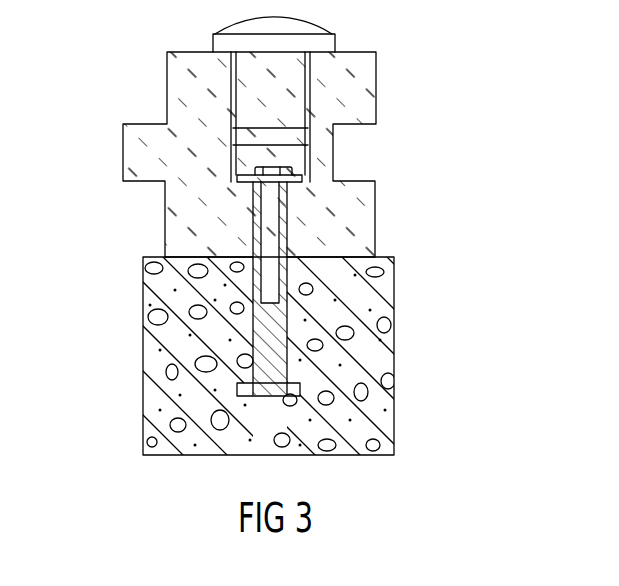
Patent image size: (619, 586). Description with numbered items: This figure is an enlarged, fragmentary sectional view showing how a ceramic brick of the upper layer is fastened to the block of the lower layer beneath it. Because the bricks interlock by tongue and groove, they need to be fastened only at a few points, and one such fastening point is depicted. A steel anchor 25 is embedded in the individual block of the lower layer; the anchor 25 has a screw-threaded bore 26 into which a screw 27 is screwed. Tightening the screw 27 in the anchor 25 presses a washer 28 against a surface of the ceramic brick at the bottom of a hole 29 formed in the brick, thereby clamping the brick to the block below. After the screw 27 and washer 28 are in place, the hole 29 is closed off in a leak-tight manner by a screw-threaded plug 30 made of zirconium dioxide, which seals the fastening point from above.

The steel anchor 25 is at (258, 351).
The screw-threaded bore 26 is at (277, 279).
The screw 27 is at (240, 173).
The washer 28 is at (300, 175).
The hole 29 is at (242, 158).
The screw-threaded plug 30 is at (245, 80).